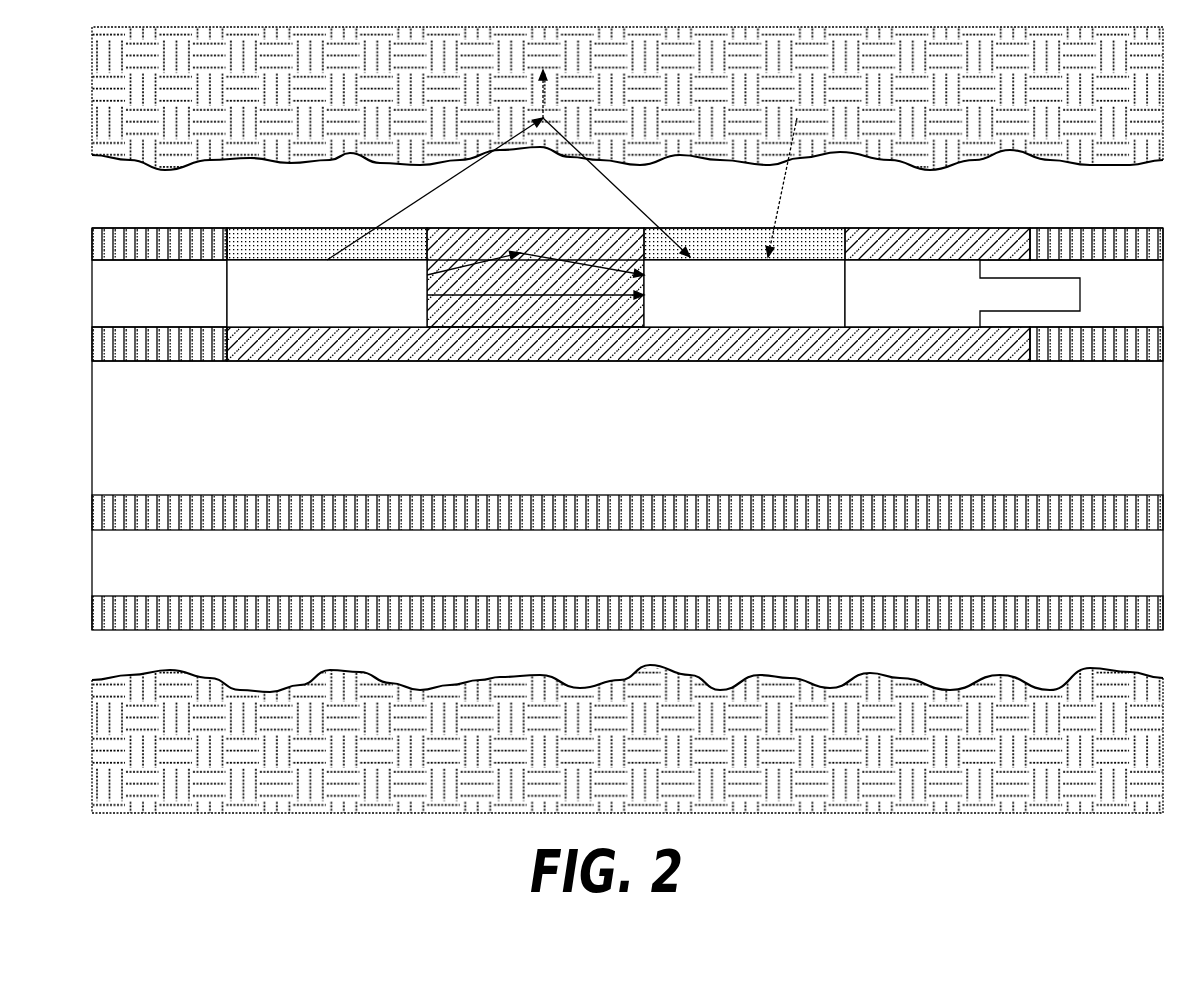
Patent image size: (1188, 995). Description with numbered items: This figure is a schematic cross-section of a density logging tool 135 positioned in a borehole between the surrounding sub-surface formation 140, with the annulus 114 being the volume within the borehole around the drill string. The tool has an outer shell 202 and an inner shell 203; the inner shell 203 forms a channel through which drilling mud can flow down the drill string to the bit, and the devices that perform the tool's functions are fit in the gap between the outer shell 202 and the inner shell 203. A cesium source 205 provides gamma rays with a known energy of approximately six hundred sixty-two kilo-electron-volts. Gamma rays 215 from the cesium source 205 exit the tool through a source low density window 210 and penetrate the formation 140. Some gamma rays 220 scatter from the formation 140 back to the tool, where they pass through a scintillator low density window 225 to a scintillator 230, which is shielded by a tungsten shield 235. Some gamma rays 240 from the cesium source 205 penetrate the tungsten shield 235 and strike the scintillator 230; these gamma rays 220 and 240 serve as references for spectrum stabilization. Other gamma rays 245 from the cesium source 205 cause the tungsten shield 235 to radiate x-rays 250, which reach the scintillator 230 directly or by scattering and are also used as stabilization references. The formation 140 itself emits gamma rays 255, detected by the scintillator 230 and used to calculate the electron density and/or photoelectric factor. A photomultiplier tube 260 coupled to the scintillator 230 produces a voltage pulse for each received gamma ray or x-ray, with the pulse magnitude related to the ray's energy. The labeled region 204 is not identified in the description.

The annulus 114 is at (160, 205).
The formation 140 is at (698, 103).
The density logging tool 135 is at (1047, 228).
The outer shell 202 is at (118, 262).
The inner shell 203 is at (118, 362).
The annulus 204 is at (177, 440).
The cesium source 205 is at (310, 328).
The source low density window 210 is at (300, 228).
The gamma rays 215 is at (408, 206).
The gamma rays 220 is at (628, 200).
The scintillator low density window 225 is at (742, 228).
The scintillator 230 is at (745, 330).
The tungsten shield 235 is at (880, 363).
The gamma rays 240 is at (460, 295).
The gamma rays 245 is at (477, 265).
The x-rays 250 is at (565, 260).
The gamma rays 255 is at (780, 203).
The photomultiplier tube (PMT) 260 is at (918, 330).